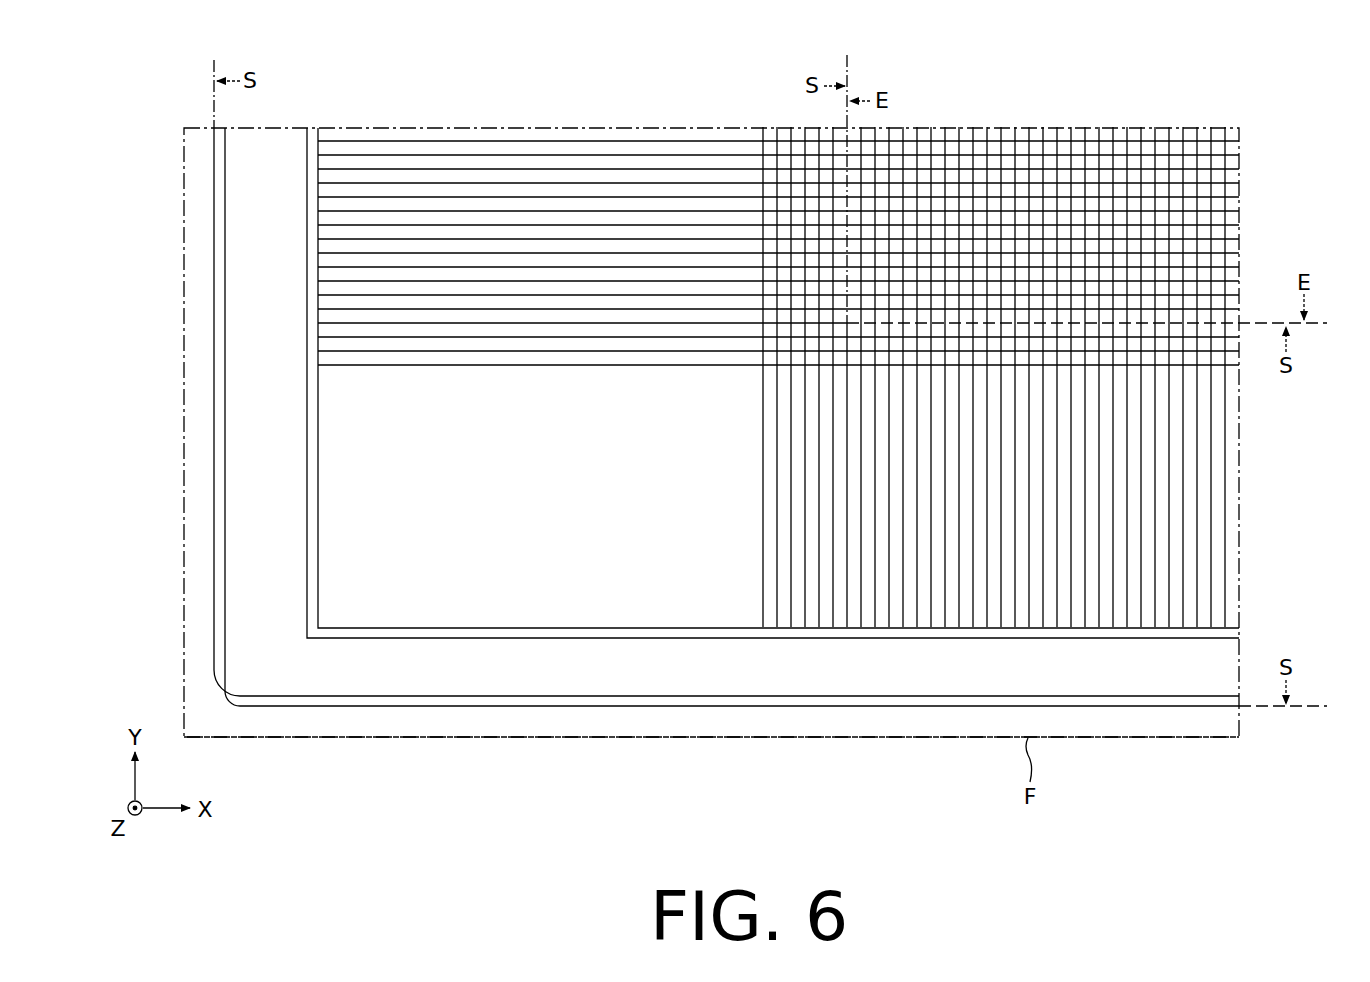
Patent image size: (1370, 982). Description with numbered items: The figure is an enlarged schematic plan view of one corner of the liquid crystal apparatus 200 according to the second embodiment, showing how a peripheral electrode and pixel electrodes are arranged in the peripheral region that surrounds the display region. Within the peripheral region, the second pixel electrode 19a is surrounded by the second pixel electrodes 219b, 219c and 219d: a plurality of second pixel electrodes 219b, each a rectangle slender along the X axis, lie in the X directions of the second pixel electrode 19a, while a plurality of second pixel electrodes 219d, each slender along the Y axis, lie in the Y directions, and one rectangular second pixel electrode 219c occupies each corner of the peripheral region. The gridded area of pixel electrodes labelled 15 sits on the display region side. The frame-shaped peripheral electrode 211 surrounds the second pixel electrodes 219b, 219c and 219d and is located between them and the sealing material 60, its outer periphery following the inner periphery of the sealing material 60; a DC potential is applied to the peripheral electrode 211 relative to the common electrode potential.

The liquid crystal apparatus 200 is at (1227, 84).
The scanning lines 15 is at (1130, 128).
The second pixel electrode 19a is at (782, 145).
The second pixel electrode 219b is at (541, 147).
The second pixel electrode 219c is at (527, 575).
The second pixel electrode 219d is at (1220, 527).
The peripheral electrode 211 is at (731, 673).
The sealing material 60 is at (833, 722).